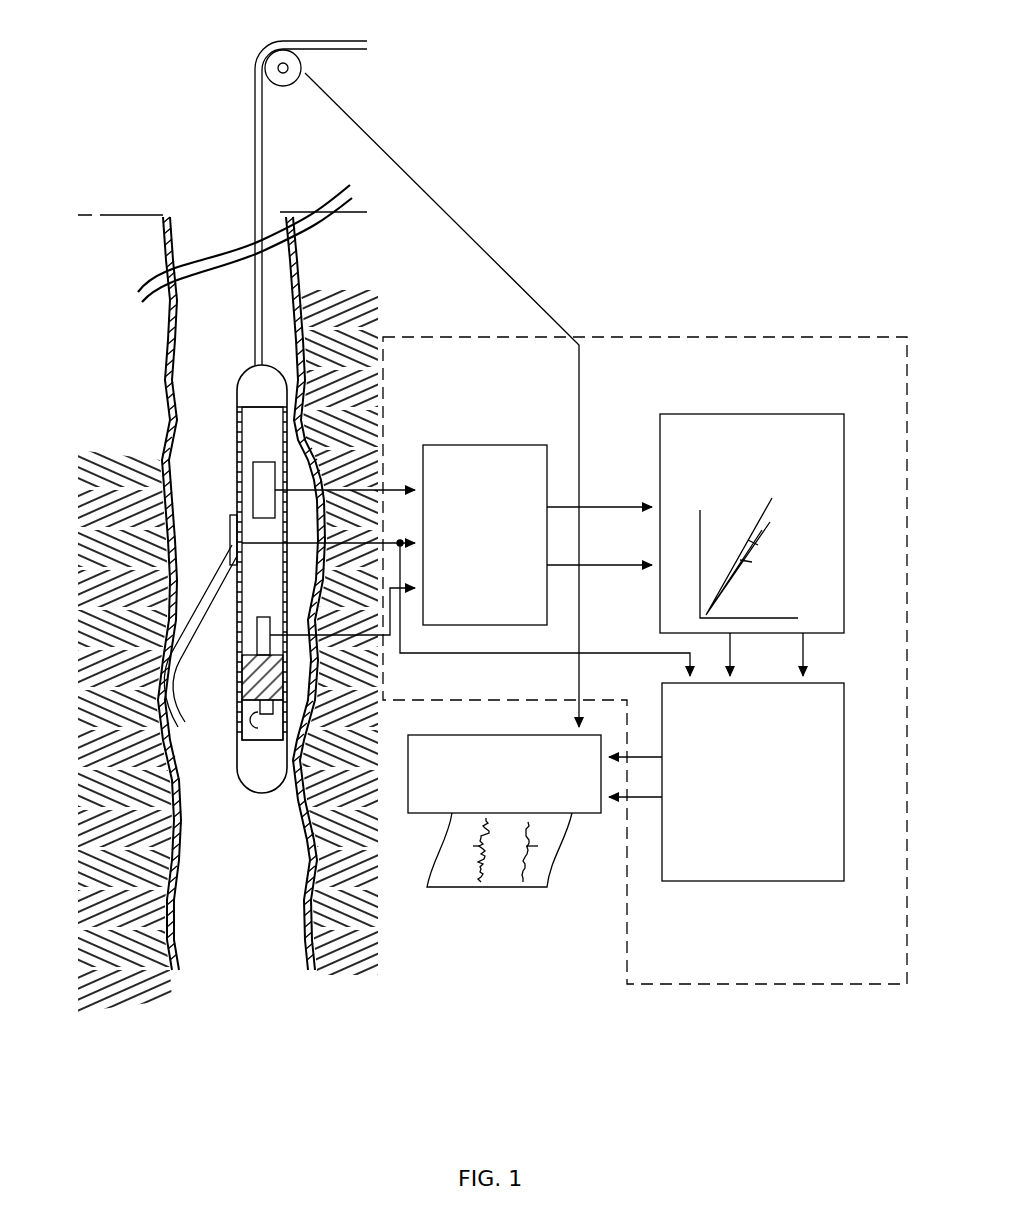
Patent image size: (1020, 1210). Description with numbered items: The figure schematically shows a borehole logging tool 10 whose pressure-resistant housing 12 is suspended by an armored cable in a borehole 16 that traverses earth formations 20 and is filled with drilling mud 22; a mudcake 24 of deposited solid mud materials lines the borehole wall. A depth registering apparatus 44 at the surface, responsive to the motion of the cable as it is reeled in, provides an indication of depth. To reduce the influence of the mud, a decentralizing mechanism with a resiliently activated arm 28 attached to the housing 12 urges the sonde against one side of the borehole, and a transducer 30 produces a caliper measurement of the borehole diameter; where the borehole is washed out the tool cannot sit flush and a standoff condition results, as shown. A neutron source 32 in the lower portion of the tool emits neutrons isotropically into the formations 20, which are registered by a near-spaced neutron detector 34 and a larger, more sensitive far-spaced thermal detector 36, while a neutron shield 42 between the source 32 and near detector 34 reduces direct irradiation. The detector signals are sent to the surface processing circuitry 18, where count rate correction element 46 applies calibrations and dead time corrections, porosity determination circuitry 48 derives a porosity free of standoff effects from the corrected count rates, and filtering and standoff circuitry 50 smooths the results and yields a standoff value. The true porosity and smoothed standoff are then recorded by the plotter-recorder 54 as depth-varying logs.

The borehole logging tool 10 is at (225, 564).
The pressure-resistant housing 12 is at (238, 628).
The borehole 16 is at (163, 368).
The surface processing circuitry 18 is at (602, 333).
The earth formations 20 is at (124, 447).
The drilling mud 22 is at (224, 303).
The mudcake 24 is at (172, 385).
The resiliently activated arm 28 is at (216, 571).
The transducer 30 is at (230, 526).
The neutron source 32 is at (262, 720).
The near-spaced neutron detector 34 is at (257, 645).
The far-spaced thermal detector 36 is at (253, 482).
The neutron shield 42 is at (248, 692).
The depth registering apparatus 44 is at (309, 66).
The count rate correction element 46 is at (508, 445).
The porosity determination circuitry 48 is at (844, 483).
The filtering and standoff circuitry 50 is at (844, 765).
The plotter-recorder 54 is at (493, 735).